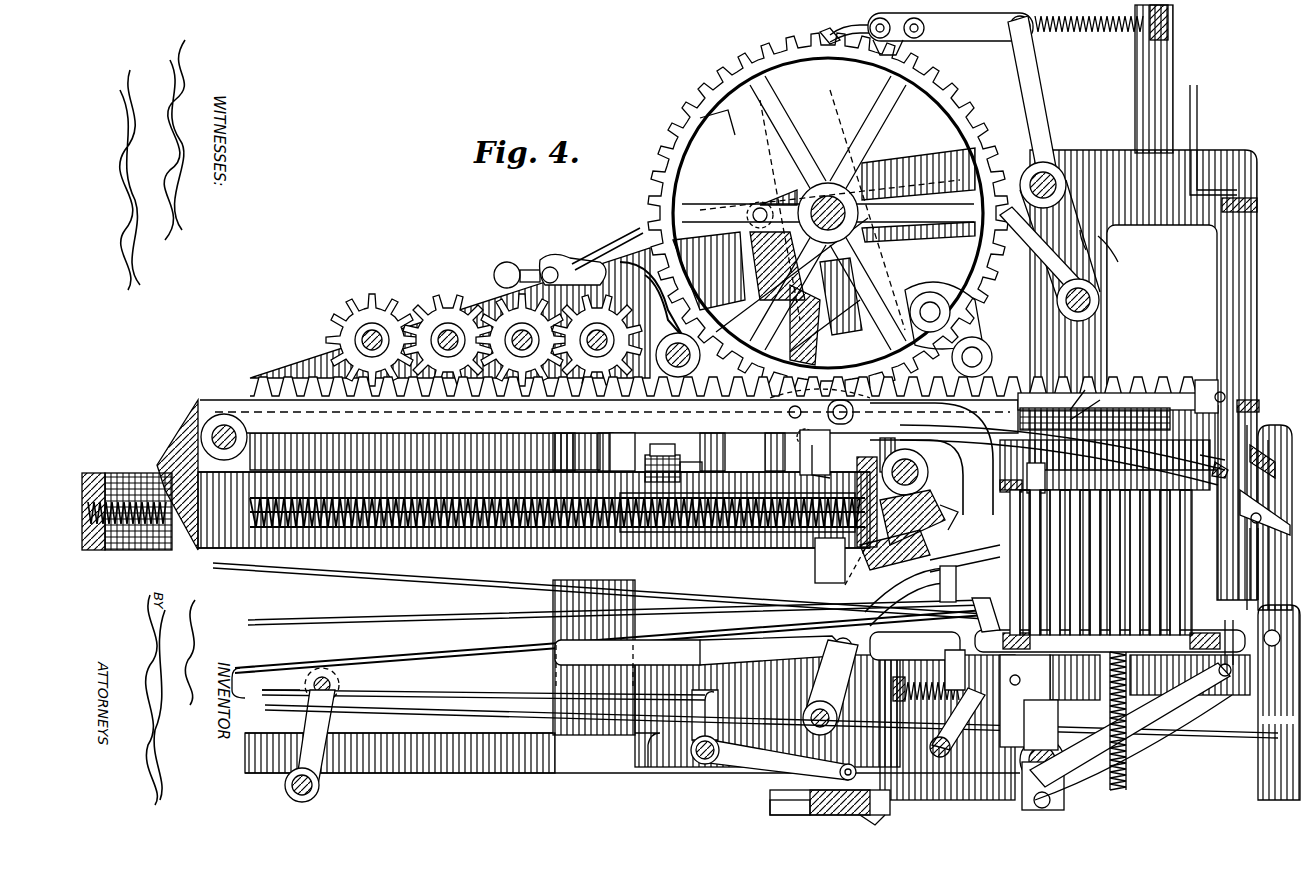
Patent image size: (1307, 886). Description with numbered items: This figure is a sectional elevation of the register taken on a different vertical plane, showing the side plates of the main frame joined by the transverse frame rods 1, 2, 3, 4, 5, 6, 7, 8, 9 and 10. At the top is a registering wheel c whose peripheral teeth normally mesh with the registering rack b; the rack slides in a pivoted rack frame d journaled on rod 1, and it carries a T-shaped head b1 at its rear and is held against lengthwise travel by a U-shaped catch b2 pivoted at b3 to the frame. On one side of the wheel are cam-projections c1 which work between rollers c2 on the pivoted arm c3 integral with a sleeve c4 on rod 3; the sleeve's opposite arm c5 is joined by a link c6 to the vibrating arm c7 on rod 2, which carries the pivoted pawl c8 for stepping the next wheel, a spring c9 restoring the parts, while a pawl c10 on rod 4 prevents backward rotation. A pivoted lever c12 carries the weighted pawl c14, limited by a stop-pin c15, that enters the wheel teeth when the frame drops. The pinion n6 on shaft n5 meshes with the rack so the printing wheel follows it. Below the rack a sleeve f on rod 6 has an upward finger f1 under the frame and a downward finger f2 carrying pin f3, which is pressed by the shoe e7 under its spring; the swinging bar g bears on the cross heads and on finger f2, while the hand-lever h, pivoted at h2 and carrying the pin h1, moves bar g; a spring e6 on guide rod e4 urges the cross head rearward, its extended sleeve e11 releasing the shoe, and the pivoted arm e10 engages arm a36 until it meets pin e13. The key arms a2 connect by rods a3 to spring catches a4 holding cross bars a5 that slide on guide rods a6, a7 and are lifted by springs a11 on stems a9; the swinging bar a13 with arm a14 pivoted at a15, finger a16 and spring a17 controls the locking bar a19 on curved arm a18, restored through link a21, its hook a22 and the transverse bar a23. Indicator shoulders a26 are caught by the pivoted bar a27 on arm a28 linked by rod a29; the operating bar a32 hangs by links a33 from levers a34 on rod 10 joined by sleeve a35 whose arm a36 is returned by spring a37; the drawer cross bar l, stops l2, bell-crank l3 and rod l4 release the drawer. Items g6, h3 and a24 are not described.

The frame rod 1 is at (215, 438).
The frame rod 2 is at (838, 200).
The frame rod 3 is at (1047, 175).
The frame rod 4 is at (1095, 300).
The frame rod 5 is at (690, 365).
The frame rod 6 is at (1010, 380).
The frame rod 7 is at (312, 787).
The frame rod 8 is at (805, 712).
The frame rod 9 is at (945, 757).
The frame rod 10 is at (1055, 770).
The registering wheel c is at (828, 213).
The cam-projections c1 is at (760, 120).
The rollers c2 is at (928, 300).
The pivoted arm c3 is at (1042, 251).
The sleeve c4 is at (1040, 180).
The projecting arm c5 is at (1033, 102).
The link c6 is at (950, 34).
The vibrating arm c7 is at (845, 112).
The pivoted pawl c8 is at (828, 35).
The spring c9 is at (1107, 32).
The pivoted pawl c10 is at (1050, 268).
The pivoted lever c12 is at (655, 292).
The weighted pawl c14 is at (625, 246).
The stop-pin c15 is at (560, 258).
The shaft n5 is at (372, 322).
The pinion n6 is at (474, 338).
The rack frame d is at (609, 416).
The registering rack b is at (1070, 380).
The T-shaped head b1 is at (1198, 380).
The U-shaped catch b2 is at (850, 405).
The pivot b3 is at (850, 395).
The link g6 is at (1130, 370).
The hand-lever h is at (560, 472).
The projecting pin h1 is at (675, 455).
The pivot h2 is at (607, 452).
The plate h3 is at (690, 470).
The spring e6 is at (680, 545).
The guide rod e4 is at (715, 545).
The extended sleeve e11 is at (752, 545).
The shoe e7 is at (815, 550).
The pivoted arm e10 is at (1062, 455).
The stud or pin e13 is at (1250, 522).
The cross bar l is at (821, 461).
The engaging stops l2 is at (818, 452).
The bell-crank lever l3 is at (718, 700).
The connecting rod l4 is at (640, 685).
The sleeve f is at (900, 460).
The curved finger f1 is at (920, 467).
The downwardly projecting finger f2 is at (930, 520).
The forwardly projecting pin f3 is at (968, 524).
The swinging bar g is at (899, 552).
The vertical arm a2 is at (200, 510).
The rod or wire a3 is at (470, 605).
The spring catch a4 is at (989, 608).
The cross bar a5 is at (800, 440).
The guide rod a6 is at (965, 557).
The guide rod a7 is at (1205, 597).
The rod or stem a9 is at (1128, 780).
The spring a11 is at (1090, 708).
The swinging bar a13 is at (940, 660).
The downwardly projecting arm a14 is at (960, 720).
The pivot a15 is at (938, 757).
The finger a16 is at (958, 590).
The spring a17 is at (905, 700).
The curved arm a18 is at (898, 590).
The locking bar a19 is at (928, 591).
The link a21 is at (702, 663).
The hook-shaped end a22 is at (266, 685).
The transverse bar a23 is at (335, 685).
The frame column a24 is at (1197, 100).
The projecting shoulder a26 is at (1250, 555).
The pivoted cross bar a27 is at (1272, 440).
The pivoted arm a28 is at (1279, 702).
The connecting rod a29 is at (480, 712).
The operating bar a32 is at (1191, 463).
The link connections a33 is at (1230, 672).
The pivoted levers a34 is at (1130, 725).
The sleeve a35 is at (1220, 668).
The projecting arm a36 is at (1042, 478).
The spring a37 is at (1140, 740).